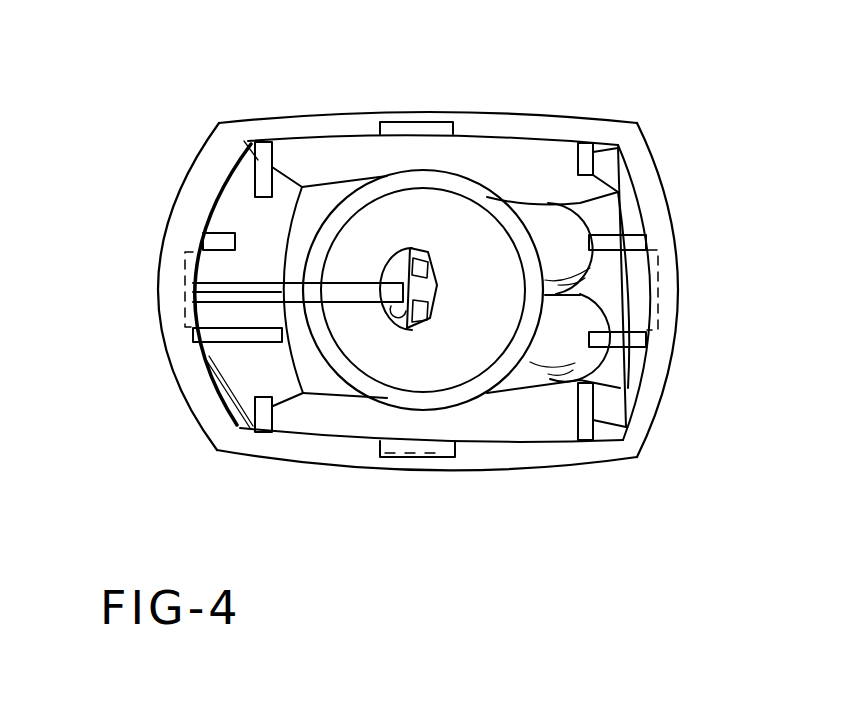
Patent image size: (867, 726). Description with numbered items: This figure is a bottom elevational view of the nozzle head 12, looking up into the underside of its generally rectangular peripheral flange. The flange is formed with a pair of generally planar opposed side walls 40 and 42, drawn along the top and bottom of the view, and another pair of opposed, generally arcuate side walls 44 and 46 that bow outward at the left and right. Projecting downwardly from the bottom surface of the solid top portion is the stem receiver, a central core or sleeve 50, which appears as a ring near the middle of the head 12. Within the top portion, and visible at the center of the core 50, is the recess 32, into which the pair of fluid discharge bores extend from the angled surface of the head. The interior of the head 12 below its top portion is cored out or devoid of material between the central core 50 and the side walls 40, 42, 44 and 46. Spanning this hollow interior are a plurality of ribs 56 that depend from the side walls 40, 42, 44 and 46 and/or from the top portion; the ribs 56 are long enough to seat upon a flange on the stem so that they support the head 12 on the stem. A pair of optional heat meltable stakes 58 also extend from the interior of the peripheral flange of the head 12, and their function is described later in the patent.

The head 12 is at (301, 110).
The recess 32 is at (407, 313).
The side wall 40 is at (486, 119).
The side wall 42 is at (540, 456).
The side wall 44 is at (663, 362).
The side wall 46 is at (180, 343).
The central core 50 is at (487, 198).
The ribs 56 is at (220, 237).
The heat meltable stakes 58 is at (263, 190).